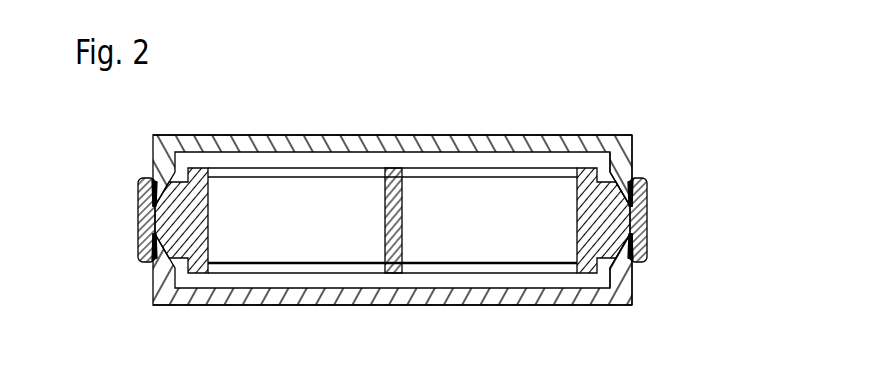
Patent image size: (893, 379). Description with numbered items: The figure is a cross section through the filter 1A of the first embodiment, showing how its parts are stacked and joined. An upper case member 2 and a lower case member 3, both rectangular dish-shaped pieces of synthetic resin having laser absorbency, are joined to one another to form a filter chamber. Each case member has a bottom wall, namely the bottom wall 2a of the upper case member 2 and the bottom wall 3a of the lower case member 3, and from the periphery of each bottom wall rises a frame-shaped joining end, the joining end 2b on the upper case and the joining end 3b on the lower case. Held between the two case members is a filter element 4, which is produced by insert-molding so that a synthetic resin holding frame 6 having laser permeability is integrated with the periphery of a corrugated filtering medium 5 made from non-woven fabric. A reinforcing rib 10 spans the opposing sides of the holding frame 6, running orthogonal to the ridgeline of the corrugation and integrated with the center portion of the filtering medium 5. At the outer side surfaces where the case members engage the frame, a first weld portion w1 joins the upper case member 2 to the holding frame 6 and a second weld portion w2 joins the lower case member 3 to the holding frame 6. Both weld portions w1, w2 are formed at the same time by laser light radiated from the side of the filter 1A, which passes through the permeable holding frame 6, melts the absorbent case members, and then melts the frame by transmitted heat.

The filter 1A is at (668, 105).
The upper case member 2 is at (278, 133).
The bottom wall of upper case member 2a is at (467, 134).
The joining end of upper case member 2b is at (622, 163).
The lower case member 3 is at (326, 307).
The bottom wall of lower case member 3a is at (448, 297).
The joining end of lower case member 3b is at (623, 267).
The filter element 4 is at (586, 166).
The filtering medium 5 is at (521, 200).
The holding frame 6 is at (638, 225).
The reinforcing rib 10 is at (393, 210).
The first weld portion w1 is at (633, 190).
The second weld portion w2 is at (634, 253).